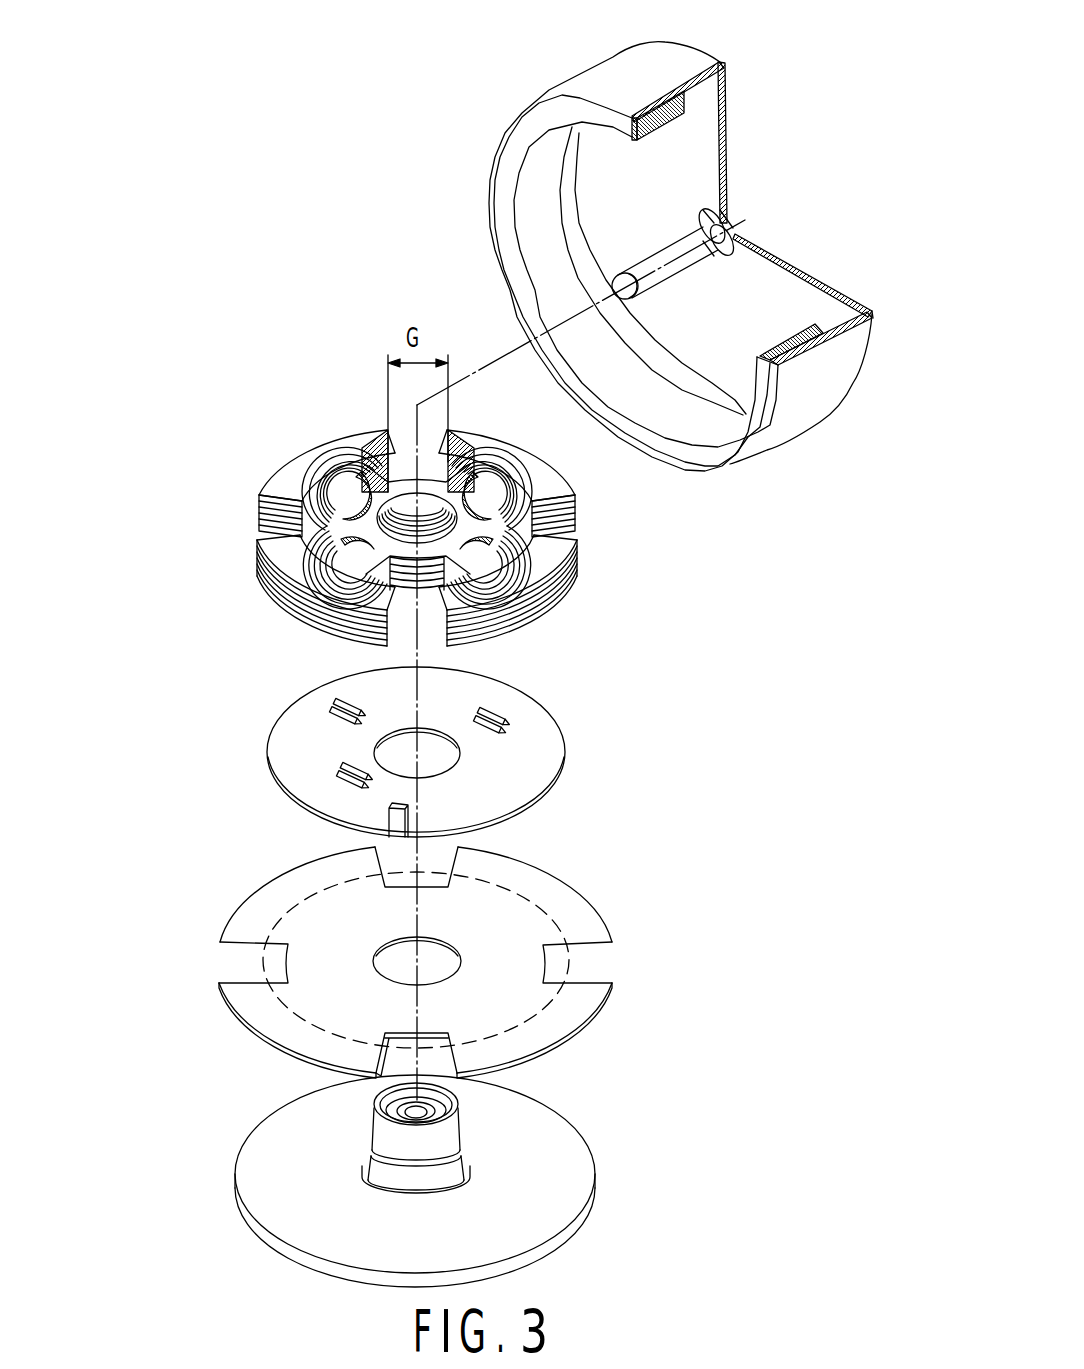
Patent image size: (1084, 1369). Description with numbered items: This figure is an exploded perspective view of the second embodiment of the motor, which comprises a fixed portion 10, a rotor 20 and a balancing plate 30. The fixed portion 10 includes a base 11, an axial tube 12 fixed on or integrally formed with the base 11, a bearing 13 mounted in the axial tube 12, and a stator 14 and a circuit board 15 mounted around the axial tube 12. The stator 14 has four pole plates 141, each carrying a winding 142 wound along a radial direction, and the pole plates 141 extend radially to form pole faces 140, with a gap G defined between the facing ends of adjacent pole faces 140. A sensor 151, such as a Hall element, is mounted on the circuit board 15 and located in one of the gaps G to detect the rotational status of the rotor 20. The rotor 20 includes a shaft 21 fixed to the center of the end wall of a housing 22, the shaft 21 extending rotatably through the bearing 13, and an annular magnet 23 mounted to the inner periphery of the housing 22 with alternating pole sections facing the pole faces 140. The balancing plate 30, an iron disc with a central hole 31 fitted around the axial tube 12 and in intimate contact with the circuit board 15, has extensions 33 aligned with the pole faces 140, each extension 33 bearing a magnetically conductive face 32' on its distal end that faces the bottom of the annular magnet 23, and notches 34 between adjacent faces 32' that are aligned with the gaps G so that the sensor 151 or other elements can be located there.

The fixed portion 10 is at (785, 558).
The base 11 is at (570, 1198).
The axial tube 12 is at (440, 1135).
The bearing 13 is at (443, 1110).
The stator 14 is at (733, 573).
The pole faces 140 is at (267, 588).
The pole plates 141 is at (468, 516).
The winding 142 is at (530, 548).
The circuit board 15 is at (552, 760).
The sensor 151 is at (383, 817).
The rotor 20 is at (465, 151).
The shaft 21 is at (683, 268).
The housing 22 is at (682, 88).
The annular magnet 23 is at (699, 114).
The balancing plate 30 is at (243, 928).
The central hole 31 is at (438, 935).
The magnetically conductive face 32' is at (632, 896).
The extensions 33 is at (508, 918).
The notches 34 is at (563, 962).